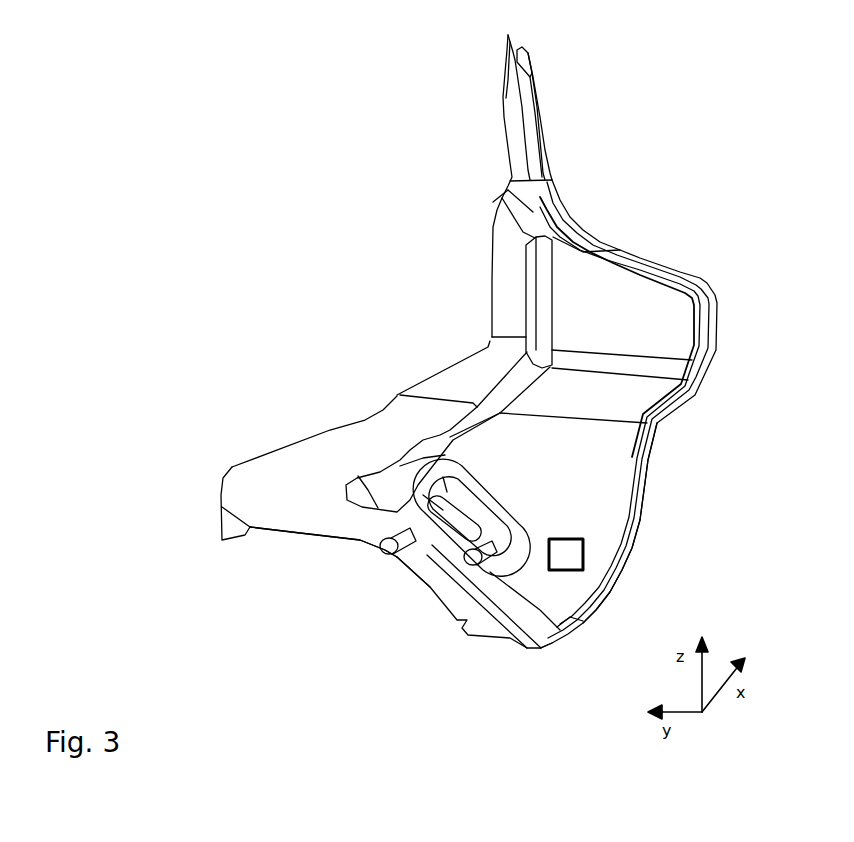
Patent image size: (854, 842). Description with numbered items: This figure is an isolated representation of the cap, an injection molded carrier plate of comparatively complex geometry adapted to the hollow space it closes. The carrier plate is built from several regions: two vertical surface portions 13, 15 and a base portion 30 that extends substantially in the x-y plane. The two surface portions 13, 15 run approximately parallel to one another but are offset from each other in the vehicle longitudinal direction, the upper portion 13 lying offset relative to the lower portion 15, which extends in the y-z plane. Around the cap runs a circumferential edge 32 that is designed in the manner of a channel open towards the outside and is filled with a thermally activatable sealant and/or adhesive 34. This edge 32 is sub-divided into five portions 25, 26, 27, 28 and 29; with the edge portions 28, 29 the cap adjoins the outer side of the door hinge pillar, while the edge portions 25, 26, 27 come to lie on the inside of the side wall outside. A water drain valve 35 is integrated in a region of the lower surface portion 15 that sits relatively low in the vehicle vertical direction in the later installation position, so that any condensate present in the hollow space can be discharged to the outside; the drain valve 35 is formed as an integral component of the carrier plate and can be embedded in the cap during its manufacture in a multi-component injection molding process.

The vertical surface portion 13 is at (670, 322).
The vertical surface portion 15 is at (603, 507).
The edge portion 25 is at (647, 250).
The edge portion 26 is at (648, 462).
The edge portion 27 is at (340, 591).
The edge portion 28 is at (340, 428).
The edge portion 29 is at (510, 147).
The base portion 30 is at (648, 397).
The edge 32 is at (720, 417).
The thermally activatable sealant and/or adhesive 34 is at (683, 278).
The water drain valve 35 is at (573, 559).